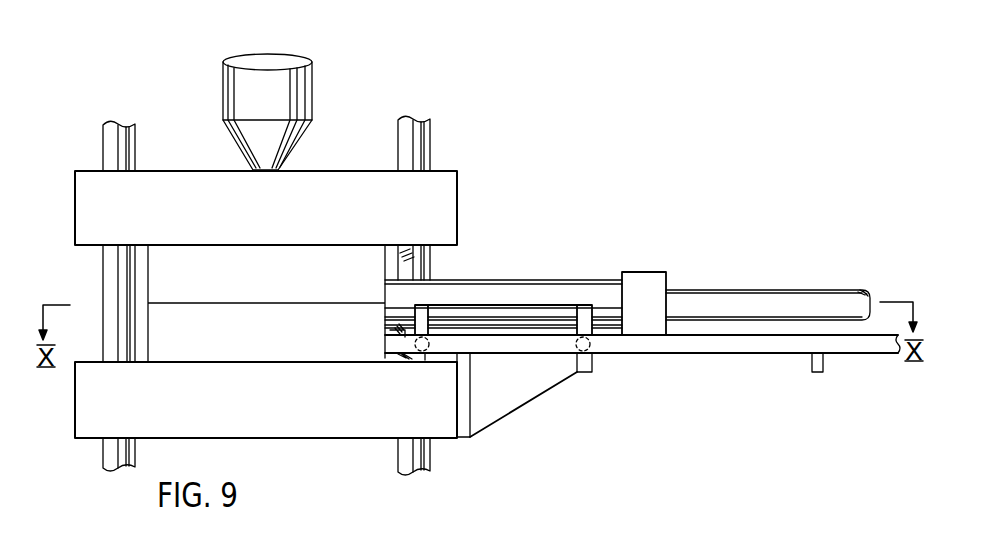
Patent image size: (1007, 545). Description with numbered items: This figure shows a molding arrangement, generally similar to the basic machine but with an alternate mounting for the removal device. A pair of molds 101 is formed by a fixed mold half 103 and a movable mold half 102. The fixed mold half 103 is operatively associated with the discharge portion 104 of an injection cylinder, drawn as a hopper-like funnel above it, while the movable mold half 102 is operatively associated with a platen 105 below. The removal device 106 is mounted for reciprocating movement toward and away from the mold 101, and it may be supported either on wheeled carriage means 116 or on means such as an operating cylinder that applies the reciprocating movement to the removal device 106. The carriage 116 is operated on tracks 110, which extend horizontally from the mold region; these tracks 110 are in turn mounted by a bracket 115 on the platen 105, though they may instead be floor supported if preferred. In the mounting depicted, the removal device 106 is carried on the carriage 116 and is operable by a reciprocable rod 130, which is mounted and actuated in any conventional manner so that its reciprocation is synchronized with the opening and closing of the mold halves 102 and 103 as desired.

The pair of molds 101 is at (388, 254).
The movable mold half 102 is at (263, 350).
The fixed mold half 103 is at (274, 258).
The discharge portion of an injection cylinder 104 is at (297, 83).
The platen 105 is at (355, 417).
The removal device 106 is at (537, 282).
The tracks 110 is at (545, 345).
The bracket 115 is at (505, 393).
The wheeled carriage means 116 is at (565, 308).
The reciprocable rod 130 is at (707, 300).